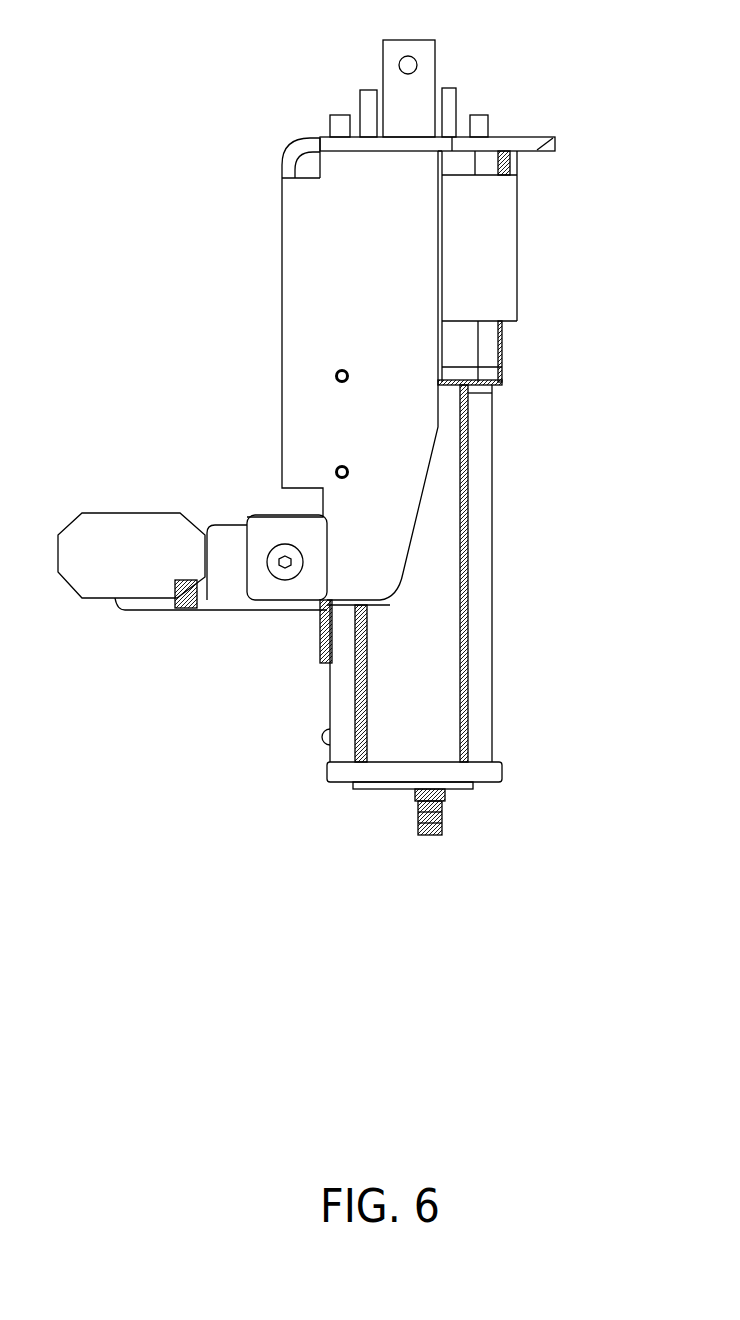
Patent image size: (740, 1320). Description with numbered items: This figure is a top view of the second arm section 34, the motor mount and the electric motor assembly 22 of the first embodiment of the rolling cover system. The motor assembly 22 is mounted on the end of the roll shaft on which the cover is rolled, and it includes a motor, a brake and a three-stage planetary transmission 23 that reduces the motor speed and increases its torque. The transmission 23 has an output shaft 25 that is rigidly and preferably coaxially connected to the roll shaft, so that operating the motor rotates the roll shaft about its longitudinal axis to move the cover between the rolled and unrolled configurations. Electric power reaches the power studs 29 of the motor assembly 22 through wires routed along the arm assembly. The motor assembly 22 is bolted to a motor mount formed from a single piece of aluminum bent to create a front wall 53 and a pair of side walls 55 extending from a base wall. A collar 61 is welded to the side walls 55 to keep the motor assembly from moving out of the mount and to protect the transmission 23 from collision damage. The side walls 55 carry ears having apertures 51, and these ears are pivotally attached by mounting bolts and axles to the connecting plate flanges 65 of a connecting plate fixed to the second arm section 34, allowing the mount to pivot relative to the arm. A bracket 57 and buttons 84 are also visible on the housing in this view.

The motor assembly 22 is at (442, 620).
The three-stage planetary transmission 23 is at (492, 347).
The output shaft 25 is at (417, 83).
The power studs 29 is at (443, 813).
The second arm section 34 is at (147, 578).
The aperture 51 is at (298, 580).
The front wall 53 is at (542, 146).
The side walls 55 is at (305, 277).
The bracket 57 is at (277, 530).
The collar 61 is at (500, 242).
The connecting plate flanges 65 is at (223, 578).
The buttons 84 is at (336, 470).